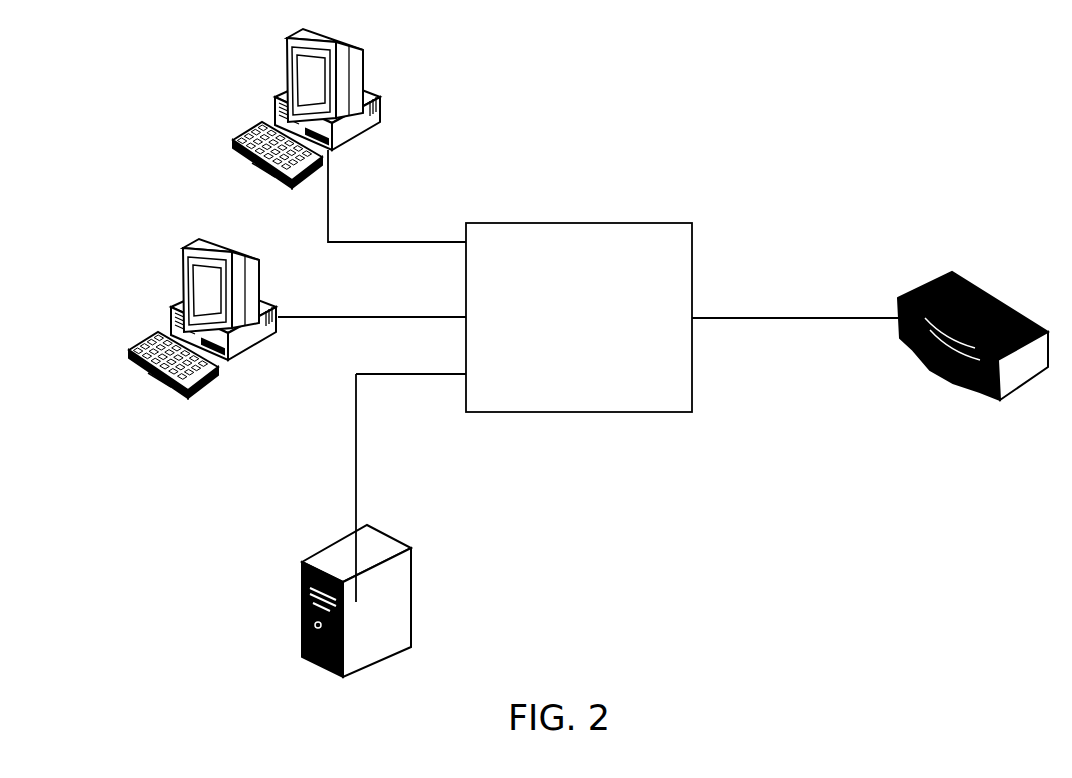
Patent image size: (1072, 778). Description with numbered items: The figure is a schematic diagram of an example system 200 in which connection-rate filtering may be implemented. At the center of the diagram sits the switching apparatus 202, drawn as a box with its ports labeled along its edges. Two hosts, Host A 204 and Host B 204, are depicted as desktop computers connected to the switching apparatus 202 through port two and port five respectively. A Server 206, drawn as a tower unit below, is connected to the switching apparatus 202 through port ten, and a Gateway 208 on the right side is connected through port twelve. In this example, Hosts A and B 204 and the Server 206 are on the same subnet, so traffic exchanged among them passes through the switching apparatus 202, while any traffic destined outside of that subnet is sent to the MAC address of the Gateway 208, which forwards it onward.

The network system 200 is at (559, 380).
The switching apparatus 202 is at (588, 289).
The host 204 is at (225, 213).
The server 206 is at (313, 529).
The gateway 208 is at (973, 376).